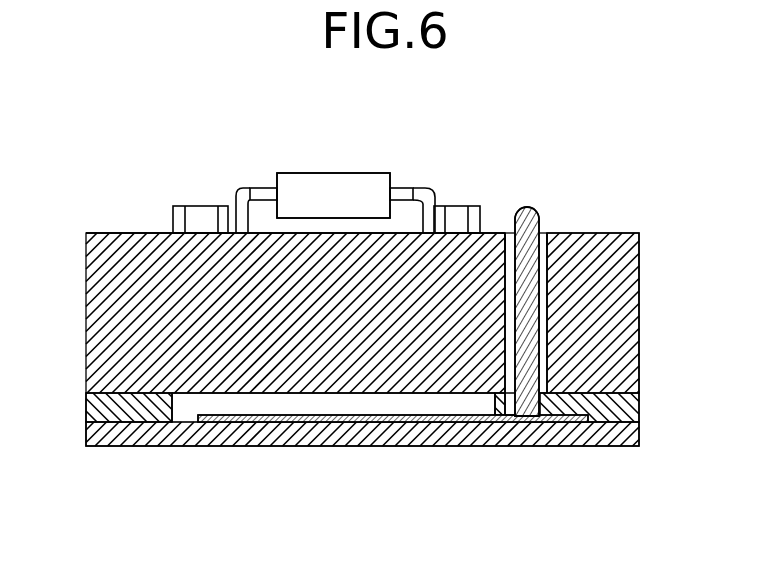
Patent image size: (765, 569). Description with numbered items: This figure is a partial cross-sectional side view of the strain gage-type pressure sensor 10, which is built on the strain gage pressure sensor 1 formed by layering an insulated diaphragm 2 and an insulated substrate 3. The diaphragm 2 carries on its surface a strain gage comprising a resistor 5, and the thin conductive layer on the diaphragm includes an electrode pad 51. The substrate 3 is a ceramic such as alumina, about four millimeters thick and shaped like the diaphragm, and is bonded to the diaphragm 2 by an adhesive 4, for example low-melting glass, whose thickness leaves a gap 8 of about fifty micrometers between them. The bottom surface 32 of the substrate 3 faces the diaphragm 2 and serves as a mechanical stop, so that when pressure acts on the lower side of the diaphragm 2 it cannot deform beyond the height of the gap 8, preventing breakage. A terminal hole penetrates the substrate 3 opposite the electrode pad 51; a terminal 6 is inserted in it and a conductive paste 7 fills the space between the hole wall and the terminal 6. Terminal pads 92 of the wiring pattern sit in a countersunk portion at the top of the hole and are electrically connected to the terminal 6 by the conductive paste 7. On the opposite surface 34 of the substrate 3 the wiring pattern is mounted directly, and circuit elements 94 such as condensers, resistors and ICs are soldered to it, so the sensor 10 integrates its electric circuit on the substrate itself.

The strain gage pressure sensor 1 is at (652, 246).
The diaphragm 2 is at (562, 437).
The substrate 3 is at (95, 313).
The bottom surface 32 is at (425, 395).
The opposite surface 34 is at (110, 233).
The adhesive 4 is at (102, 405).
The resistor 5 is at (263, 418).
The electrode pad 51 is at (523, 425).
The terminal 6 is at (525, 212).
The conductive paste 7 is at (503, 242).
The gap 8 is at (360, 405).
The terminal pads 92 is at (507, 238).
The circuit elements 94 is at (203, 213).
The pressure sensor 10 is at (348, 150).